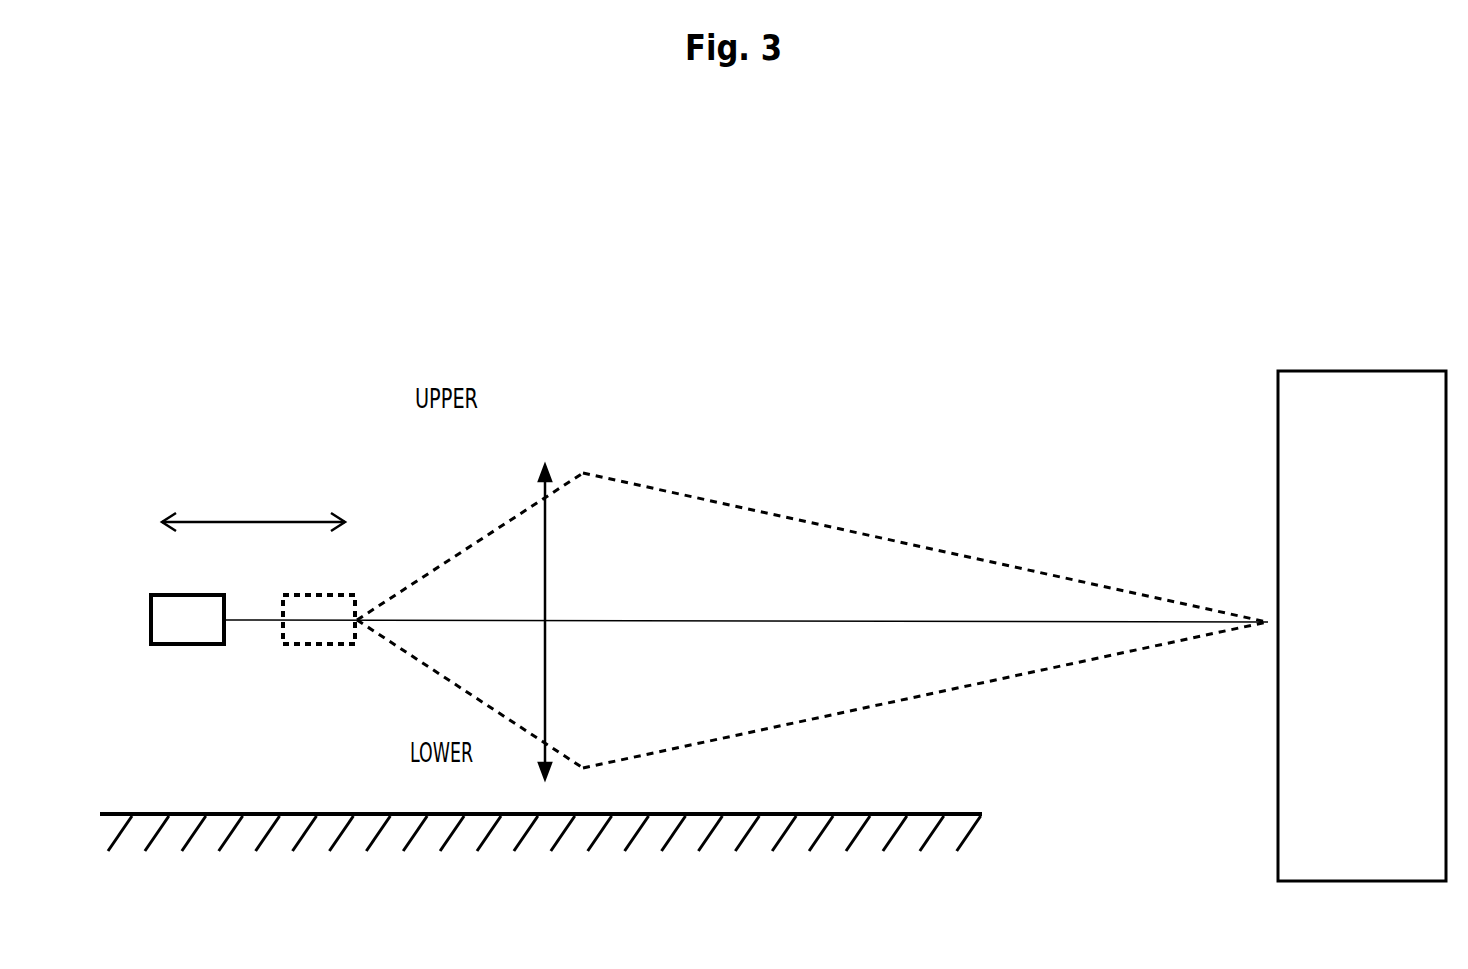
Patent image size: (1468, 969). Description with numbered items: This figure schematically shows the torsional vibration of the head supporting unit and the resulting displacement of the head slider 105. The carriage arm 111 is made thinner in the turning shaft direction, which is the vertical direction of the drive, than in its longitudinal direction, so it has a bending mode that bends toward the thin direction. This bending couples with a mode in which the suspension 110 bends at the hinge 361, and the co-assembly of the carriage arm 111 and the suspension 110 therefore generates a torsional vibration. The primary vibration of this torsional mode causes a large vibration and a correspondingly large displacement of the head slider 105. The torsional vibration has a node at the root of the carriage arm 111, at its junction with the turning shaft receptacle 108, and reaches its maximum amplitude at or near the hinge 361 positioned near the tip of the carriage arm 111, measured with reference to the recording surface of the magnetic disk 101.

The head slider 105 is at (195, 645).
The suspension 110 is at (512, 520).
The hinge 361 is at (583, 472).
The carriage arm 111 is at (747, 508).
The turning shaft receptacle 108 is at (1277, 412).
The magnetic disk 101 is at (933, 815).